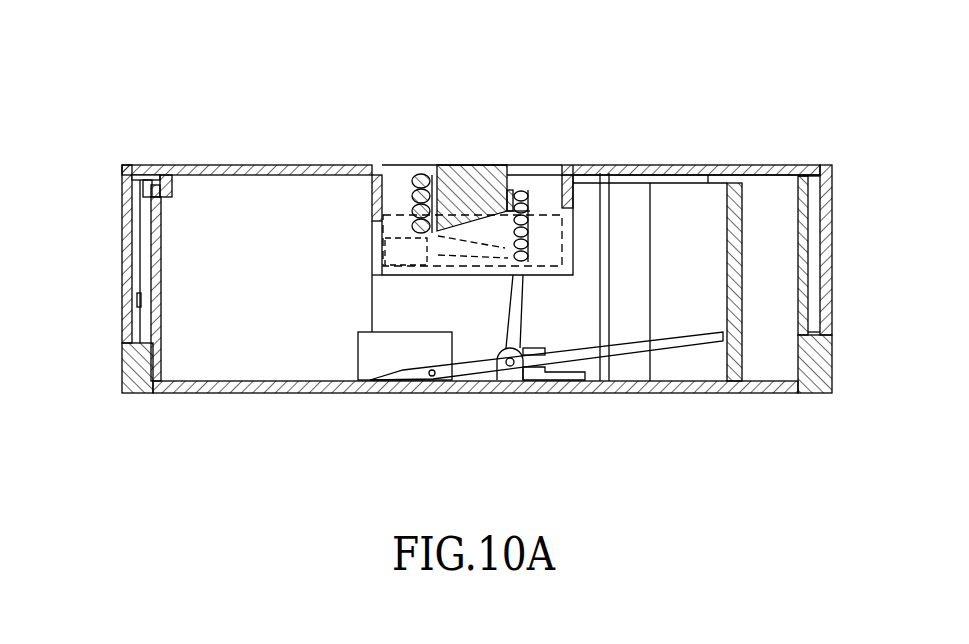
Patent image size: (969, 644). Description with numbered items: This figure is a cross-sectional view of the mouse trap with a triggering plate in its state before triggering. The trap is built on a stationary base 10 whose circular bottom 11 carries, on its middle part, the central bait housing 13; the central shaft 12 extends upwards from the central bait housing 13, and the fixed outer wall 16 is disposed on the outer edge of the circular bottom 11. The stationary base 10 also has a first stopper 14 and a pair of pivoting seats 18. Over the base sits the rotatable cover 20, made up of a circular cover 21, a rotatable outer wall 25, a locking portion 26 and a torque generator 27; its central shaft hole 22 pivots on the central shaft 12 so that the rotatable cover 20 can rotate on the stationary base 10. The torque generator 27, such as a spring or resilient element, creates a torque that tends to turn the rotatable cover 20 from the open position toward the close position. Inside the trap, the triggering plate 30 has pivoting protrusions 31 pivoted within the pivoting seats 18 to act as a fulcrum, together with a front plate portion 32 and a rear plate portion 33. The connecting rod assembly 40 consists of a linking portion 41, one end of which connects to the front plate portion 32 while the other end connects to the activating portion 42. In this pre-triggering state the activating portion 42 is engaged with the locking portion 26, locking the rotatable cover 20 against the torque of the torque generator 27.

The stationary base 10 is at (818, 72).
The circular bottom 11 is at (770, 380).
The central shaft 12 is at (440, 184).
The central bait housing 13 is at (562, 368).
The first stopper 14 is at (686, 183).
The fixed outer wall 16 is at (798, 258).
The pivoting seats 18 is at (512, 225).
The rotatable cover 20 is at (378, 73).
The circular cover 21 is at (125, 177).
The central shaft hole 22 is at (437, 172).
The rotatable outer wall 25 is at (120, 176).
The locking portion 26 is at (157, 177).
The torque generator 27 is at (415, 228).
The triggering plate 30 is at (687, 450).
The pivoting protrusions 31 is at (565, 387).
The front plate portion 32 is at (467, 373).
The rear plate portion 33 is at (677, 343).
The connecting rod assembly 40 is at (195, 458).
The linking portion 41 is at (203, 393).
The activating portion 42 is at (145, 188).